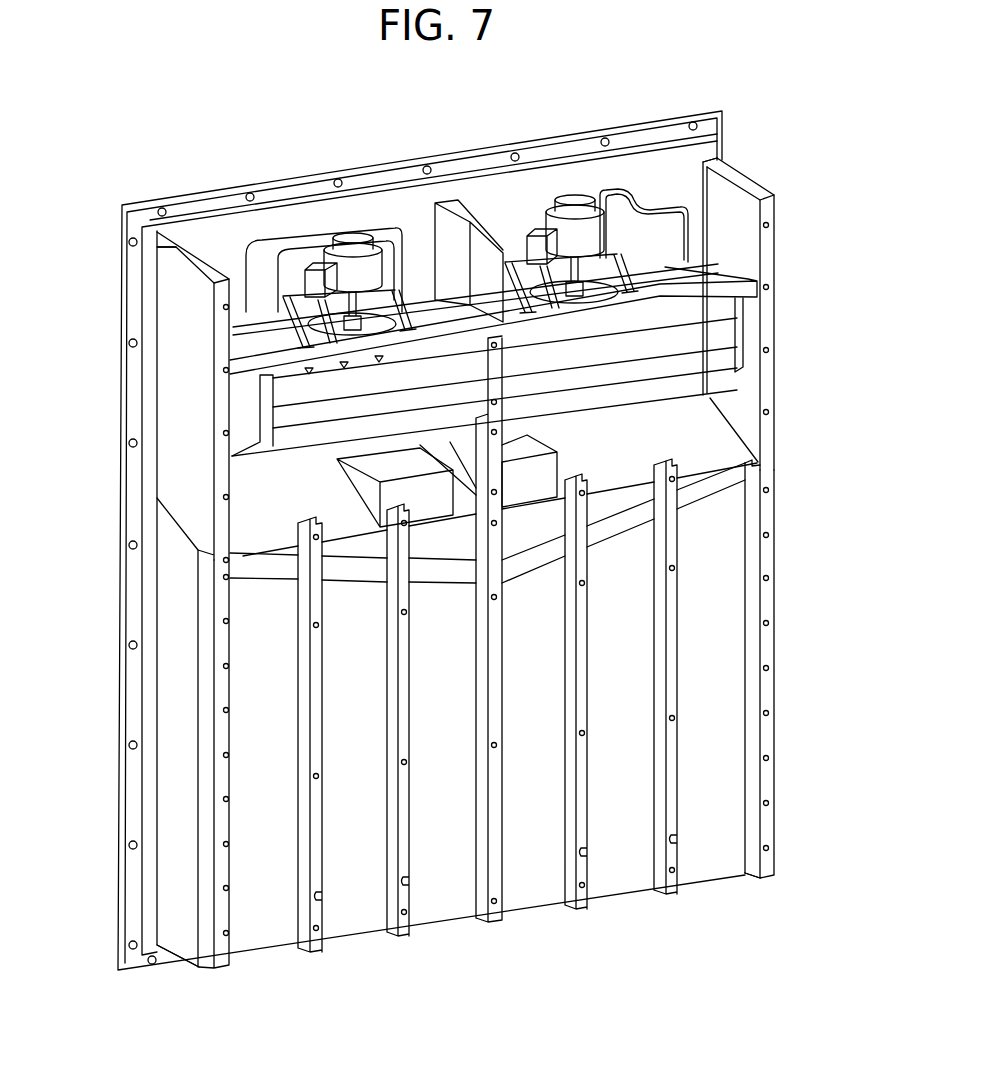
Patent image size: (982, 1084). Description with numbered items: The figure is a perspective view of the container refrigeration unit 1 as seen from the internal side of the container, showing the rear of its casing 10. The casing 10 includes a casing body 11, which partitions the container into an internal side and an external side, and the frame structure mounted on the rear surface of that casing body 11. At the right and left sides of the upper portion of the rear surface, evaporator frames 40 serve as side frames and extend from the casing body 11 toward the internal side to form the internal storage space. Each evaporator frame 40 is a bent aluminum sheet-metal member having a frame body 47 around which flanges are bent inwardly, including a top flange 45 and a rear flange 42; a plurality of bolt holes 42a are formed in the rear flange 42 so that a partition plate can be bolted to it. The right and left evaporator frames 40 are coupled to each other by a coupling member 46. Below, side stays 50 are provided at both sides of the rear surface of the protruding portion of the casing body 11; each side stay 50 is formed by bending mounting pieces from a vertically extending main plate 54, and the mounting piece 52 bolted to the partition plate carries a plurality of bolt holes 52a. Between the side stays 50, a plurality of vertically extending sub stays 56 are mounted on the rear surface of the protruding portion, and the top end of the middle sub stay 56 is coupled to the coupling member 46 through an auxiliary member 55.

The container refrigeration unit 1 is at (92, 129).
The casing 10 is at (90, 423).
The casing body 11 is at (118, 565).
The evaporator frame 40 is at (189, 247).
The rear flange 42 is at (222, 346).
The bolt holes 42a is at (222, 307).
The top flange 45 is at (176, 247).
The coupling member 46 is at (735, 293).
The frame body 47 is at (200, 293).
The side stay 50 is at (208, 970).
The mounting piece 52 is at (229, 689).
The bolt holes 52a is at (230, 742).
The main plate 54 is at (205, 688).
The auxiliary member 55 is at (504, 380).
The sub stay 56 is at (672, 895).